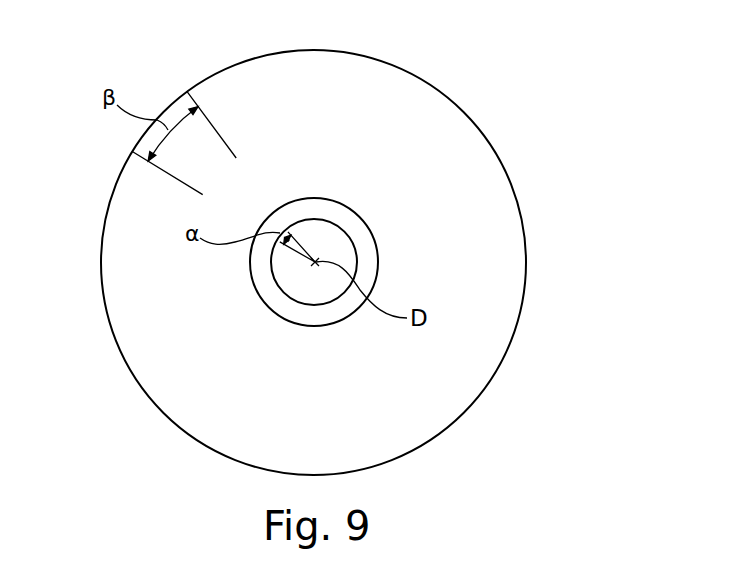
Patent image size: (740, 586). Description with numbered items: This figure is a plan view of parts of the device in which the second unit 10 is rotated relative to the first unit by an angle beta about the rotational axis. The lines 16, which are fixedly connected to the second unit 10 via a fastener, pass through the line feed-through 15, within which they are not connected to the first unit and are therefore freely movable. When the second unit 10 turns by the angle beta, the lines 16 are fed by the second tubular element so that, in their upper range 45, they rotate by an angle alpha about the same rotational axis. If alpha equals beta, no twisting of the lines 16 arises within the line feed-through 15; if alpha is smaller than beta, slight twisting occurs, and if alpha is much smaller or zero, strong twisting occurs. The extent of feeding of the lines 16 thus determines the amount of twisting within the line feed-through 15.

The second unit 10 is at (505, 237).
The line feed-through 15 is at (350, 304).
The lines 16 is at (323, 238).
The upper range 45 is at (314, 305).